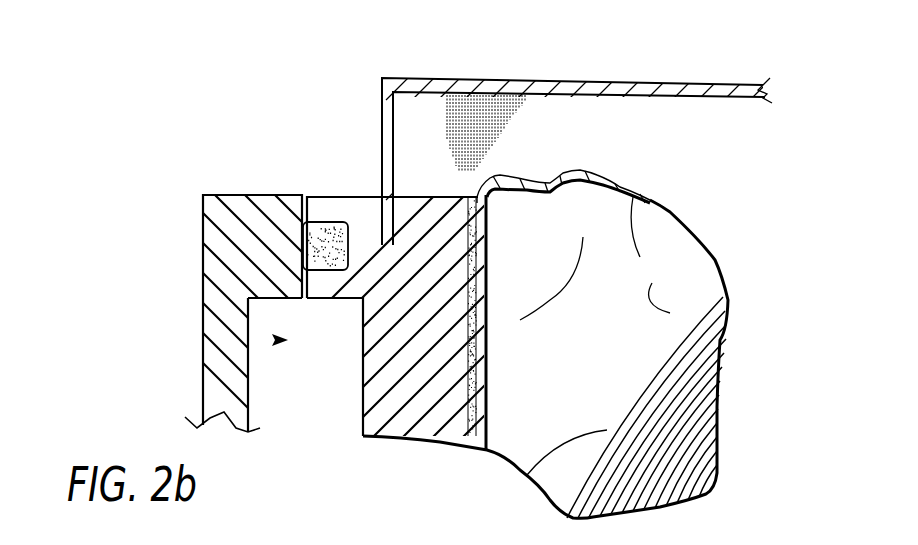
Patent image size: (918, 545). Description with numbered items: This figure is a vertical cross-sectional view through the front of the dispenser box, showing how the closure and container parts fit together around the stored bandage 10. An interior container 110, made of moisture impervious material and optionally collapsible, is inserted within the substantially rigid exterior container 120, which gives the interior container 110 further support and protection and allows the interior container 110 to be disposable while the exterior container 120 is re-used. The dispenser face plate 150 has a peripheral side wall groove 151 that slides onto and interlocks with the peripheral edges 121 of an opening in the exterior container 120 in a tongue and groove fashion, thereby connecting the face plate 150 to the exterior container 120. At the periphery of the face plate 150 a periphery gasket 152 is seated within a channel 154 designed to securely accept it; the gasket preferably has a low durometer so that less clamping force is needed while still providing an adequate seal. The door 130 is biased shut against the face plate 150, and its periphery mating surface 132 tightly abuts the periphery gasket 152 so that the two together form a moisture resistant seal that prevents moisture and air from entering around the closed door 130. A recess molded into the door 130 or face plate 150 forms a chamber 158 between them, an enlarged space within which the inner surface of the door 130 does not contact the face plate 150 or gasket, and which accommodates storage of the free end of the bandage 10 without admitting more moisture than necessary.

The bandage 10 is at (673, 383).
The interior container 110 is at (582, 172).
The exterior container 120 is at (442, 80).
The peripheral edges 121 is at (390, 247).
The door 130 is at (203, 300).
The periphery mating surface 132 is at (305, 216).
The dispenser face plate 150 is at (363, 388).
The peripheral side wall groove 151 is at (395, 214).
The periphery gasket 152 is at (306, 254).
The channel 154 is at (330, 222).
The chamber 158 is at (278, 340).